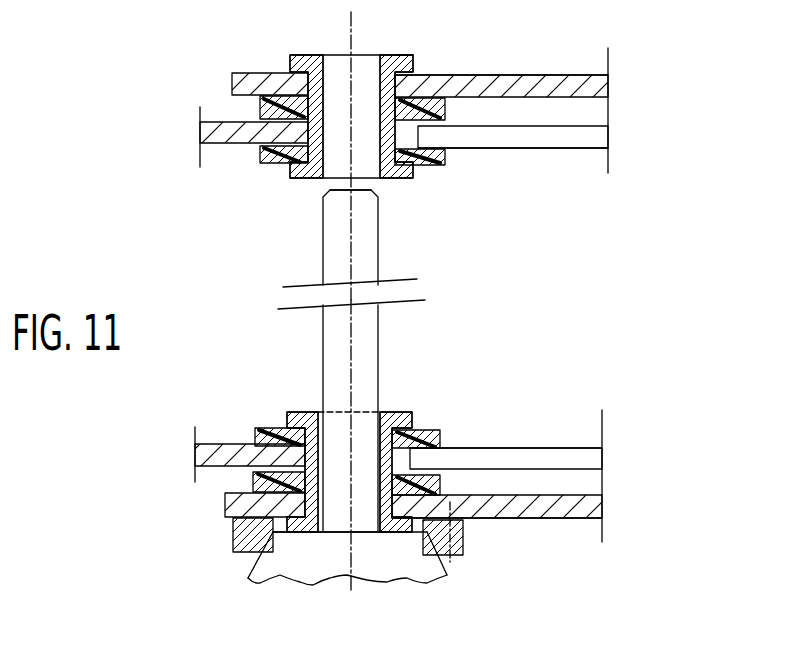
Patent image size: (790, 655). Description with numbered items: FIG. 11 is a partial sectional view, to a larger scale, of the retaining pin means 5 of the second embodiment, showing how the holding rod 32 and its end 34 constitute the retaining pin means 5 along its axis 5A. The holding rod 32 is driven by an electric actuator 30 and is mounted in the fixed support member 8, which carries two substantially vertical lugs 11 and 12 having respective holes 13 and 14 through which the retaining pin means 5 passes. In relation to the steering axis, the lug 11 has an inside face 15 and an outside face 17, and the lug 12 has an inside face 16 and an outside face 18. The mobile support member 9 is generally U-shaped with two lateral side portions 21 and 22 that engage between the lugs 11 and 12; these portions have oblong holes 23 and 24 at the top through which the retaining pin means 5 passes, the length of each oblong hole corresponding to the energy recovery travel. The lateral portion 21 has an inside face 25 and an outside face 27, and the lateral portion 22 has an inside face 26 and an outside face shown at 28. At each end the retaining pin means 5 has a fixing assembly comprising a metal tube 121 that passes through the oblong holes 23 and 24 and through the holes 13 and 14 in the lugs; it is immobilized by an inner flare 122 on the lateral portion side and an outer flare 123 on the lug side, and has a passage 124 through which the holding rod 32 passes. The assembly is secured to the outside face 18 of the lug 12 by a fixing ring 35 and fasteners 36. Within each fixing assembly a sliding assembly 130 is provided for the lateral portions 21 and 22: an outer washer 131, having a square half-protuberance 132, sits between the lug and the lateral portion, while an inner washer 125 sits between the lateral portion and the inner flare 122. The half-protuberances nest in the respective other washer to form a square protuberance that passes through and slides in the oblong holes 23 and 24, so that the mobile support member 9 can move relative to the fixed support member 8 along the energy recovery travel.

The retaining pin means 5 is at (386, 237).
The axis 5A is at (330, 154).
The fixed support member 8 is at (533, 37).
The mobile support member 9 is at (537, 191).
The lug 11 is at (501, 47).
The lug 12 is at (497, 534).
The hole 13 is at (425, 39).
The hole 14 is at (374, 465).
The inside face 15 is at (527, 93).
The inside face 16 is at (521, 501).
The outside face 17 is at (588, 91).
The outside face 18 is at (584, 488).
The lateral side portion 21 is at (240, 112).
The lateral side portion 22 is at (241, 427).
The oblong hole 23 is at (538, 151).
The oblong hole 24 is at (530, 449).
The inside face 25 is at (513, 175).
The inside face 26 is at (506, 420).
The outside face 27 is at (620, 128).
The gap 28 is at (618, 468).
The electric actuator 30 is at (347, 581).
The holding rod 32 is at (351, 405).
The end 34 is at (326, 214).
The fixing ring 35 is at (342, 542).
The fasteners 36 is at (356, 554).
The metal tube 121 is at (416, 293).
The inner flare 122 is at (274, 293).
The outer flare 123 is at (341, 318).
The passage 124 is at (367, 270).
The inner washer 125 is at (258, 294).
The bearing assembly 130 is at (229, 647).
The outer washer 131 is at (236, 273).
The square half-protuberance 132 is at (445, 296).